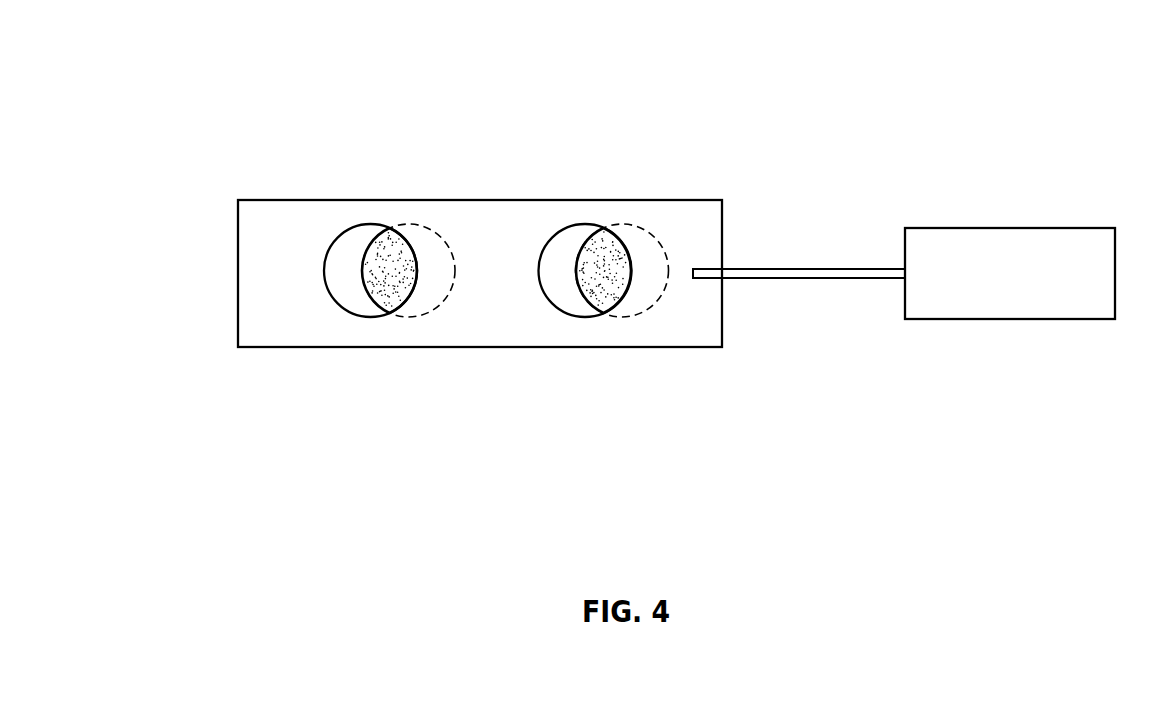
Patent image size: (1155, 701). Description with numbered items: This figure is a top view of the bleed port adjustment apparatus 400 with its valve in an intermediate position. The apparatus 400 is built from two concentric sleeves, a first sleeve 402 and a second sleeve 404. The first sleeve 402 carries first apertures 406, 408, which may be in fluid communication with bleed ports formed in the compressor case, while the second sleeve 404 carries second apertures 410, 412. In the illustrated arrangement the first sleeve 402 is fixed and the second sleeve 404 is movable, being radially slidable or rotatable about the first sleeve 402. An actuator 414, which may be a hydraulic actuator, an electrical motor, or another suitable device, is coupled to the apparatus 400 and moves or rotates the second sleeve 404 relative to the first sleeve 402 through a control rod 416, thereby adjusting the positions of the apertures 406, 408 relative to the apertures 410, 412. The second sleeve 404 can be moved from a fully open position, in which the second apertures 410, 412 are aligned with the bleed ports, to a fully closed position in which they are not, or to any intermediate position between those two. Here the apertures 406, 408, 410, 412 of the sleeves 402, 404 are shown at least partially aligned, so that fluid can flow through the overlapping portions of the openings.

The bleed port adjustment apparatus 400 is at (235, 48).
The first sleeve 402 is at (685, 209).
The second sleeve 404 is at (251, 255).
The first aperture 406 is at (357, 243).
The first aperture 408 is at (583, 318).
The second aperture 410 is at (635, 315).
The second aperture 412 is at (405, 318).
The actuator 414 is at (978, 227).
The control rod 416 is at (822, 282).